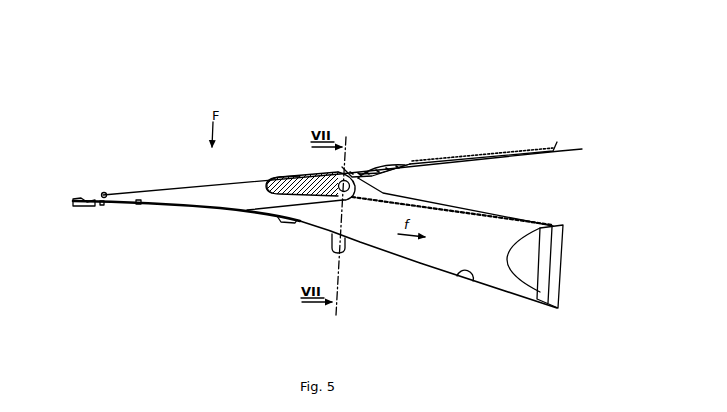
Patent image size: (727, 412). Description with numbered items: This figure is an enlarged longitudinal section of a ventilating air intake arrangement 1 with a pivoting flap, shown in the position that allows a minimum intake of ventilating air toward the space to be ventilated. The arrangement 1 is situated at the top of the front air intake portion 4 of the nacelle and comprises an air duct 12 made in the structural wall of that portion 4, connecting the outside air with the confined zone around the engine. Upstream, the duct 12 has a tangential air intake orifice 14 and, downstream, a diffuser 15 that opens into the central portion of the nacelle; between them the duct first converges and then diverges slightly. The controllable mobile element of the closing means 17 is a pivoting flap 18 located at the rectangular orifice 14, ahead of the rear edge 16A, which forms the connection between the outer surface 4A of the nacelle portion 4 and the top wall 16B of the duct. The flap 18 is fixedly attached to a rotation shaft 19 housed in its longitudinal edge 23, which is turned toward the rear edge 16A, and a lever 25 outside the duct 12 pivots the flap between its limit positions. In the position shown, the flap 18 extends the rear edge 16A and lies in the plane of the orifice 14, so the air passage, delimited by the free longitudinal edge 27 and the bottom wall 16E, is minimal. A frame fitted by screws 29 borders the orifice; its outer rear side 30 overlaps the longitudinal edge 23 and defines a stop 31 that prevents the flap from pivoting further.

The ventilating air intake arrangement 1 is at (190, 146).
The front air intake portion 4 is at (110, 251).
The outer surface 4A is at (517, 157).
The air duct 12 is at (468, 247).
The air intake orifice 14 is at (205, 185).
The diffuser 15 is at (563, 300).
The rear edge 16A is at (403, 170).
The wall of the duct 16B is at (465, 210).
The bottom wall 16E is at (460, 269).
The closing means 17 is at (290, 167).
The pivoting flap 18 is at (310, 196).
The rotation shaft 19 is at (292, 160).
The longitudinal edge 23 is at (348, 168).
The lever 25 is at (345, 250).
The free longitudinal edge 27 is at (268, 189).
The screws 29 is at (104, 193).
The outer rear side 30 is at (375, 166).
The stop 31 is at (357, 172).